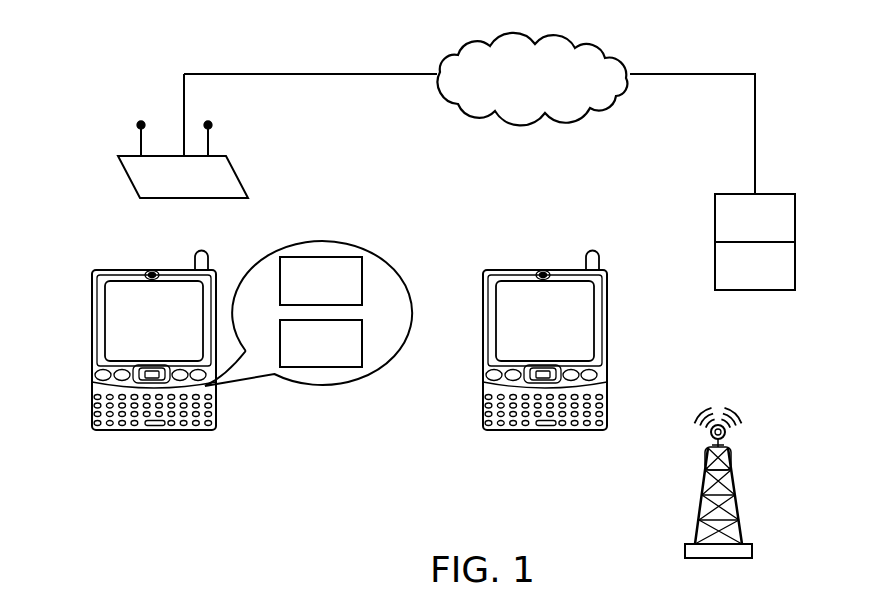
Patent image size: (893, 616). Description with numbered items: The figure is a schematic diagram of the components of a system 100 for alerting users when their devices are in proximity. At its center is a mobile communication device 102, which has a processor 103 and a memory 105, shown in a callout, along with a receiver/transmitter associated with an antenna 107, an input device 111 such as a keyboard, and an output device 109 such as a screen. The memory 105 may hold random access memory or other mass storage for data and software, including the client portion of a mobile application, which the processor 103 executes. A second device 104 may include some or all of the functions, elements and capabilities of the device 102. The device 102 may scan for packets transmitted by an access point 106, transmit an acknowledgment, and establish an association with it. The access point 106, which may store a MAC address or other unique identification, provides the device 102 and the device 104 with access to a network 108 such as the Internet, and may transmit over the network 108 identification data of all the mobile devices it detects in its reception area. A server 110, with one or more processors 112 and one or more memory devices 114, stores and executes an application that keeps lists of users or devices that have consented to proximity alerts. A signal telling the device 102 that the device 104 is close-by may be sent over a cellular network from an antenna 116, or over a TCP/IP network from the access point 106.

The system 100 is at (148, 36).
The mobile communication device 102 is at (125, 357).
The processor 103 is at (345, 254).
The device 104 is at (571, 432).
The memory 105 is at (345, 372).
The access point 106 is at (238, 176).
The antenna 107 is at (195, 265).
The network 108 is at (625, 51).
The output device 109 is at (108, 328).
The server 110 is at (747, 242).
The input device 111 is at (120, 428).
The processor 112 is at (713, 222).
The memory 114 is at (713, 270).
The antenna 116 is at (743, 506).